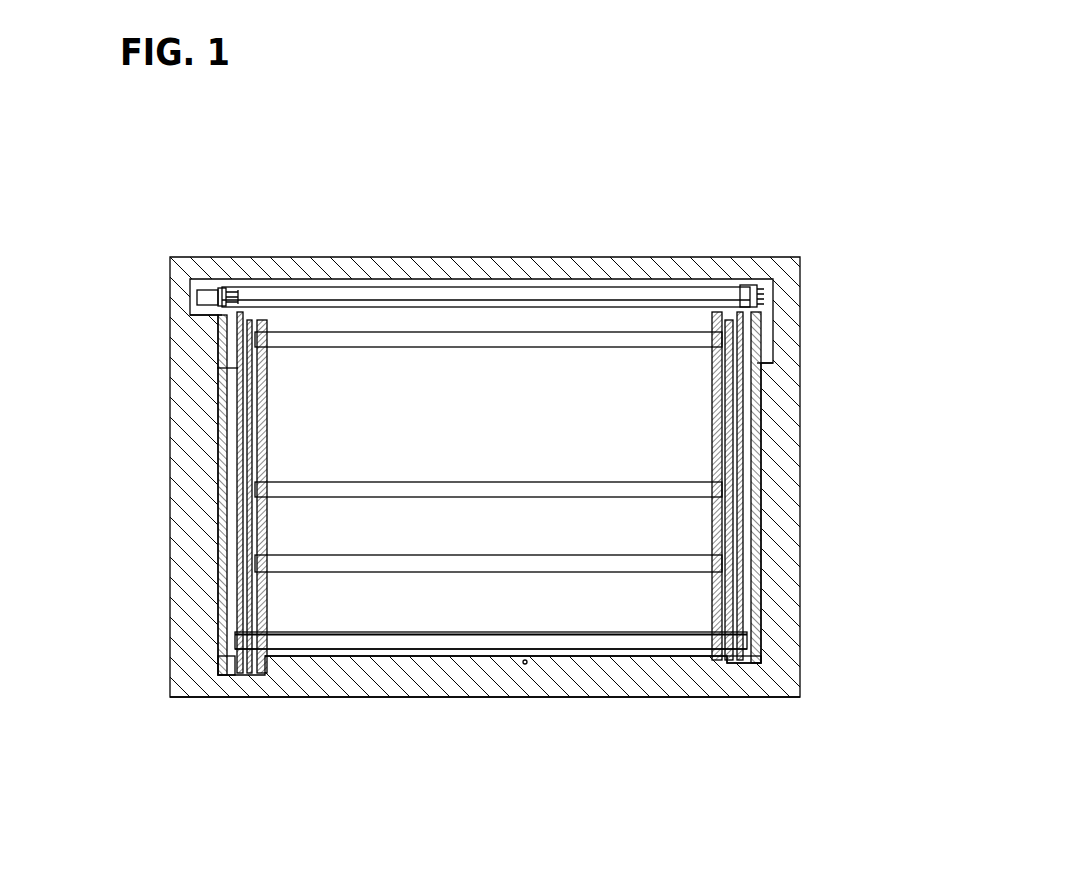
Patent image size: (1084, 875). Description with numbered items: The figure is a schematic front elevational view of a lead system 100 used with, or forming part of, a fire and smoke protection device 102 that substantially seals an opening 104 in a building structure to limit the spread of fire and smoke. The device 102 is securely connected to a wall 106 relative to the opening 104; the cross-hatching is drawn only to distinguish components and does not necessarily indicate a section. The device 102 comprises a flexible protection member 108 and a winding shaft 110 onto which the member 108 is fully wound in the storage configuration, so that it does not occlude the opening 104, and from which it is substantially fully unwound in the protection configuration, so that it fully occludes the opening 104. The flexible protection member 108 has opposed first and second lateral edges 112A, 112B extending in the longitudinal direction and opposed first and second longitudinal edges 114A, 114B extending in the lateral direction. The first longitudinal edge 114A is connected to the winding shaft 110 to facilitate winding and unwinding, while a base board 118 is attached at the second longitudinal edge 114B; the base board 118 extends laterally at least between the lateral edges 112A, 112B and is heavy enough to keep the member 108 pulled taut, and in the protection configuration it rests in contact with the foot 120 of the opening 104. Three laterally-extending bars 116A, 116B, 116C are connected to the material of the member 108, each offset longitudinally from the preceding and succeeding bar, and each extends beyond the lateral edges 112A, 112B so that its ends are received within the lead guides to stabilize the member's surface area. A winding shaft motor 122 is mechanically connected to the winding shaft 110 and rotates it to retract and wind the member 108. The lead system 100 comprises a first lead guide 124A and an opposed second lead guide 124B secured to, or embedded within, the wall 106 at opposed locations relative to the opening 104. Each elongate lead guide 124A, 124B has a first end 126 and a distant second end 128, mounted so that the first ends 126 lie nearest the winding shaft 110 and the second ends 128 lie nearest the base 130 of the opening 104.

The lead system 100 is at (787, 220).
The fire and smoke protection device 102 is at (542, 444).
The opening 104 is at (412, 656).
The wall 106 is at (761, 338).
The flexible protection member 108 is at (508, 460).
The winding shaft 110 is at (742, 298).
The first lateral edge 112A is at (235, 447).
The second lateral edge 112B is at (745, 605).
The first longitudinal edge 114A is at (398, 302).
The second longitudinal edge 114B is at (332, 634).
The laterally-extending bar 116A is at (710, 415).
The laterally-extending bar 116B is at (710, 490).
The laterally-extending bar 116C is at (710, 565).
The base board 118 is at (663, 640).
The foot 120 is at (525, 664).
The winding shaft motor 122 is at (216, 300).
The first lead guide 124A is at (228, 340).
The second lead guide 124B is at (745, 383).
The first end 126 is at (228, 312).
The second end 128 is at (222, 675).
The base 130 is at (372, 657).